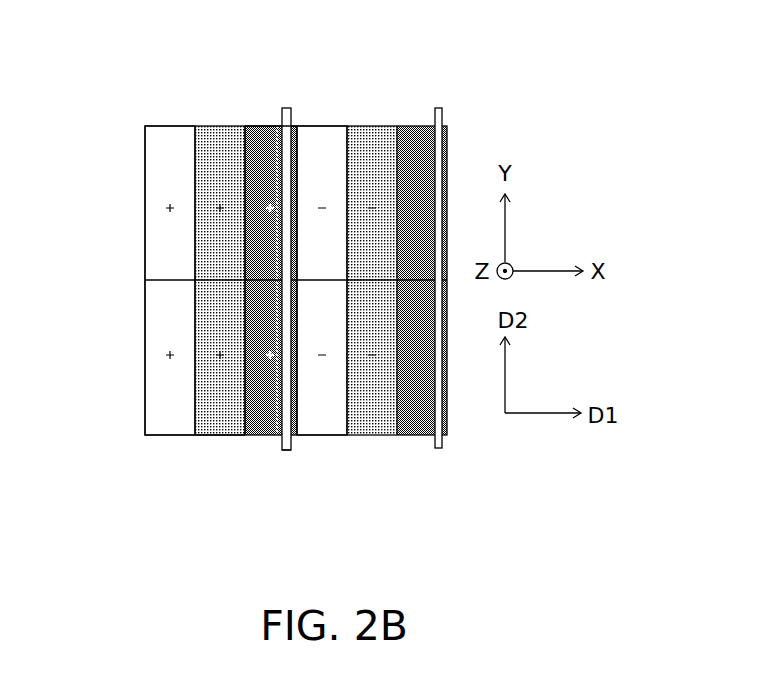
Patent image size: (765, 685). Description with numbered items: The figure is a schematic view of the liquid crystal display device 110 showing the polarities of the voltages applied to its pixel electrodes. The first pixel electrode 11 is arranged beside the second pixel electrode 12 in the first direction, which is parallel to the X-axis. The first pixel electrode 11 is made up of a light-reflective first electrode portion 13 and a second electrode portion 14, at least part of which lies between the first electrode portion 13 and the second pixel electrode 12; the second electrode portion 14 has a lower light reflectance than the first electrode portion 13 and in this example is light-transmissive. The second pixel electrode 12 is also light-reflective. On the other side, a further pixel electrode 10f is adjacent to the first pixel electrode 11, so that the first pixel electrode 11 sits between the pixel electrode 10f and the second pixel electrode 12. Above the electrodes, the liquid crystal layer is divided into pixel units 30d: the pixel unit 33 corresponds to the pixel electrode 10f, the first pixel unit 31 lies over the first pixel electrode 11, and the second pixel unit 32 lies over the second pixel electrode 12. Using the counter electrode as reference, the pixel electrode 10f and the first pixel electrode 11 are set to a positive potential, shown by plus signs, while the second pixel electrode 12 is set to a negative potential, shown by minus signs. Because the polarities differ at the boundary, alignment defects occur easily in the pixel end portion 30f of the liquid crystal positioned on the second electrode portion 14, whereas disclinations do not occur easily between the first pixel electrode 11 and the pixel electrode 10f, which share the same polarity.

The first pixel electrode 11 is at (232, 54).
The first electrode portion 13 is at (259, 124).
The second electrode portion 14 is at (286, 110).
The liquid crystal display device 110 is at (470, 102).
The pixel units 30d is at (170, 413).
The pixel unit 33 is at (198, 436).
The first pixel unit 31 is at (247, 436).
The pixel electrode 10f is at (222, 436).
The pixel end portion 30f is at (287, 452).
The second pixel electrode 12 is at (305, 436).
The second pixel unit 32 is at (332, 436).